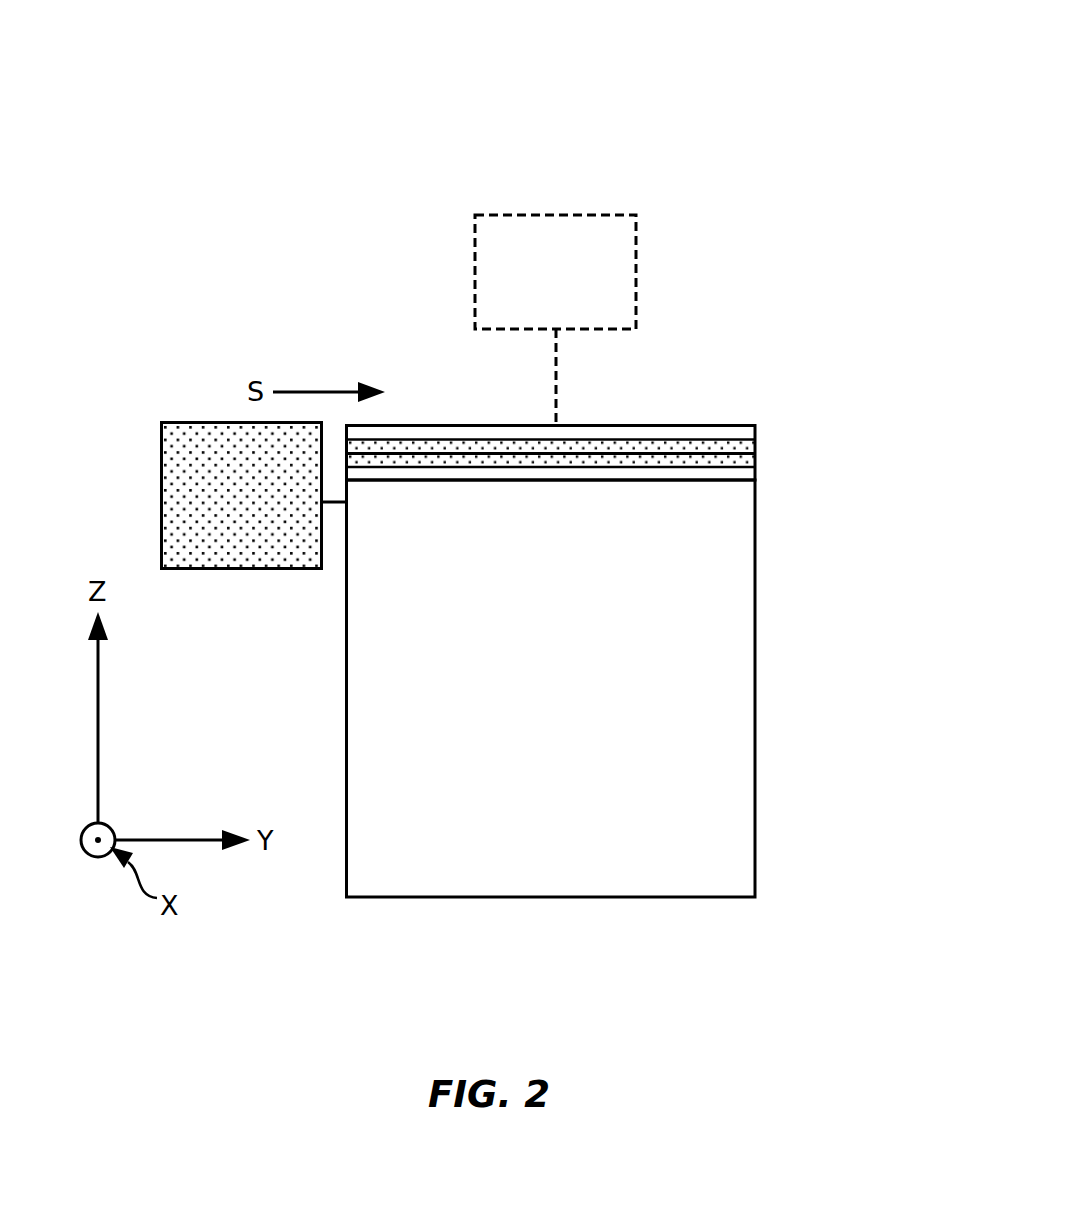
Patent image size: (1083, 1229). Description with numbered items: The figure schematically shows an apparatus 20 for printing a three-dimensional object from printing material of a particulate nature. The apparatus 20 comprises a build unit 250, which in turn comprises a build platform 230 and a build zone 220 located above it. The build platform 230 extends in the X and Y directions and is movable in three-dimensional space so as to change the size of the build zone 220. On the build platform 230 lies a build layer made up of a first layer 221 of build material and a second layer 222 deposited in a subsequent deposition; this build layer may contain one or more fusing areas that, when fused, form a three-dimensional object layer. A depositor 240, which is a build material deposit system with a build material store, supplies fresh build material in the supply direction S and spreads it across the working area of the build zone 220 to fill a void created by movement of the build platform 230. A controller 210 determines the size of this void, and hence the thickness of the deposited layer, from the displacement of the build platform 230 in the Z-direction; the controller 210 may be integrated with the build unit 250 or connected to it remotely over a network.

The apparatus 20 is at (780, 95).
The controller 210 is at (475, 244).
The build zone 220 is at (611, 446).
The first layer 221 is at (748, 458).
The second layer 222 is at (746, 446).
The build platform 230 is at (523, 482).
The depositor 240 is at (161, 447).
The build unit 250 is at (755, 597).